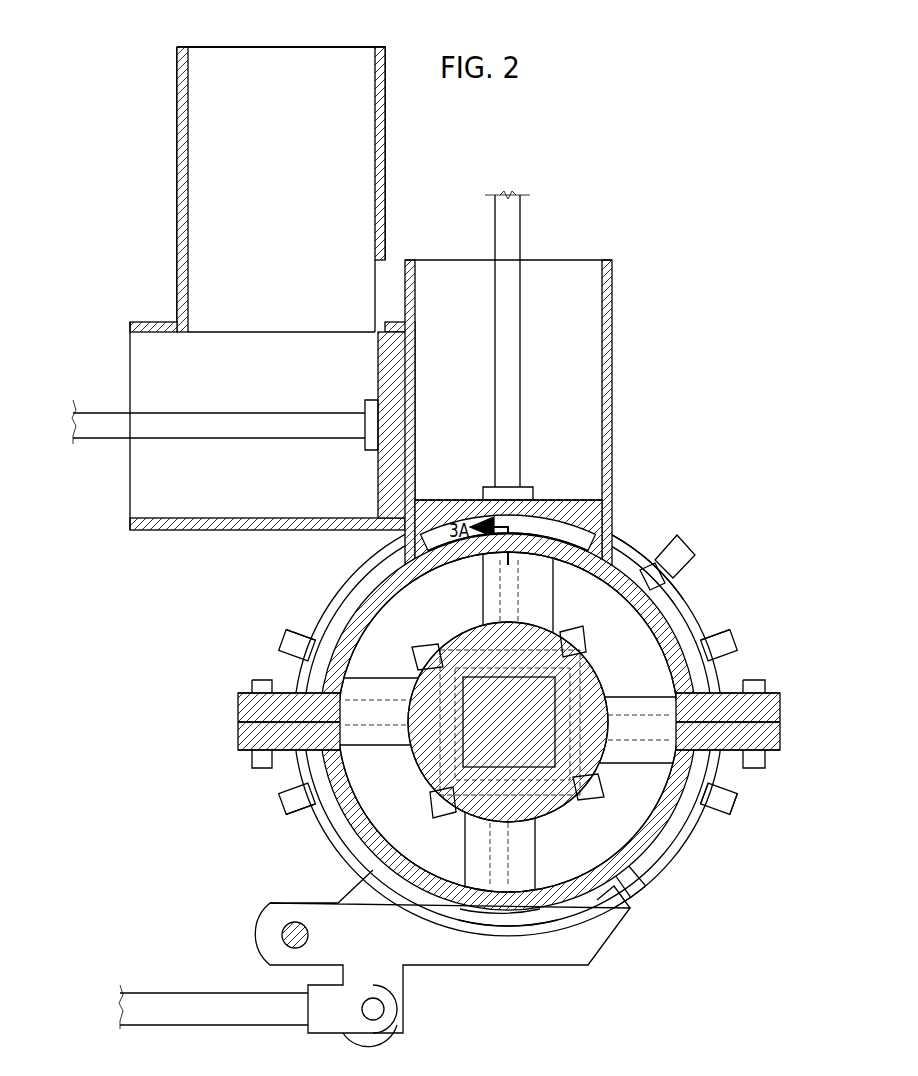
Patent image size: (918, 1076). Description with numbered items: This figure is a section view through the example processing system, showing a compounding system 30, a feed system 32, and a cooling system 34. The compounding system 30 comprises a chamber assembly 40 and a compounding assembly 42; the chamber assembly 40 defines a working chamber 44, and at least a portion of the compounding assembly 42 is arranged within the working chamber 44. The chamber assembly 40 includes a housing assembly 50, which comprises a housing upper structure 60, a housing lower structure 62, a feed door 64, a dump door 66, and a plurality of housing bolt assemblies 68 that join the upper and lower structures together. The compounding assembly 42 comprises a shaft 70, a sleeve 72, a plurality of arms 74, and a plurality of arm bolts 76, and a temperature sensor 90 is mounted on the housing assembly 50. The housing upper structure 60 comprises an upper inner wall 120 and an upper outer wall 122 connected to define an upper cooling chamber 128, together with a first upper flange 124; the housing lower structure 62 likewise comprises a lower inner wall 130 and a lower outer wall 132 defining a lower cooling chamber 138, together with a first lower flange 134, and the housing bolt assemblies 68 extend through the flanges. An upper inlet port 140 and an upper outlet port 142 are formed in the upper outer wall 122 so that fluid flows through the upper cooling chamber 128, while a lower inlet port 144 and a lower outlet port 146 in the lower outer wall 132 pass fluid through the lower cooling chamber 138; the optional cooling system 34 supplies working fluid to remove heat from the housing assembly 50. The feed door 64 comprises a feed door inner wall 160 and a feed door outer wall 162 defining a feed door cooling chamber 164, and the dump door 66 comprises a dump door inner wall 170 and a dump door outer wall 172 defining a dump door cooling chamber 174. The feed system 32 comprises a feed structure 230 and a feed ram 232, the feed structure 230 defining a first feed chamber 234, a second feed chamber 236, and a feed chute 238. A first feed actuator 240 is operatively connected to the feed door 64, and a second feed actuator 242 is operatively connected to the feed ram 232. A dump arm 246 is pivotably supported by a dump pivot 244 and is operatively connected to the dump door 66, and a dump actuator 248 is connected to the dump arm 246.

The compounding system 30 is at (332, 572).
The feed system 32 is at (150, 130).
The cooling system 34 is at (285, 640).
The chamber assembly 40 is at (322, 590).
The compounding assembly 42 is at (566, 806).
The working chamber 44 is at (459, 616).
The housing assembly 50 is at (316, 617).
The housing upper structure 60 is at (238, 706).
The housing lower structure 62 is at (240, 750).
The feed door 64 is at (470, 495).
The dump door 66 is at (580, 930).
The housing bolt assemblies 68 is at (252, 686).
The shaft 70 is at (432, 772).
The sleeve 72 is at (560, 805).
The arms 74 is at (545, 612).
The arm bolts 76 is at (584, 640).
The temperature sensor 90 is at (693, 548).
The upper inner wall 120 is at (682, 588).
The upper outer wall 122 is at (692, 606).
The first upper flange 124 is at (238, 722).
The upper cooling chamber 128 is at (703, 622).
The lower inner wall 130 is at (672, 852).
The lower outer wall 132 is at (690, 838).
The first lower flange 134 is at (238, 740).
The lower cooling chamber 138 is at (705, 820).
The upper inlet port 140 is at (288, 660).
The upper outlet port 142 is at (742, 655).
The lower inlet port 144 is at (283, 797).
The lower outlet port 146 is at (742, 797).
The feed door inner wall 160 is at (562, 545).
The feed door outer wall 162 is at (540, 512).
The feed door cooling chamber 164 is at (548, 528).
The dump door inner wall 170 is at (525, 906).
The dump door outer wall 172 is at (490, 922).
The dump door cooling chamber 174 is at (512, 916).
The feed structure 230 is at (150, 160).
The feed ram 232 is at (378, 380).
The first feed chamber 234 is at (570, 345).
The second feed chamber 236 is at (272, 426).
The feed chute 238 is at (290, 188).
The first feed actuator 240 is at (520, 240).
The second feed actuator 242 is at (100, 440).
The dump pivot 244 is at (285, 930).
The dump arm 246 is at (455, 948).
The dump actuator 248 is at (212, 995).